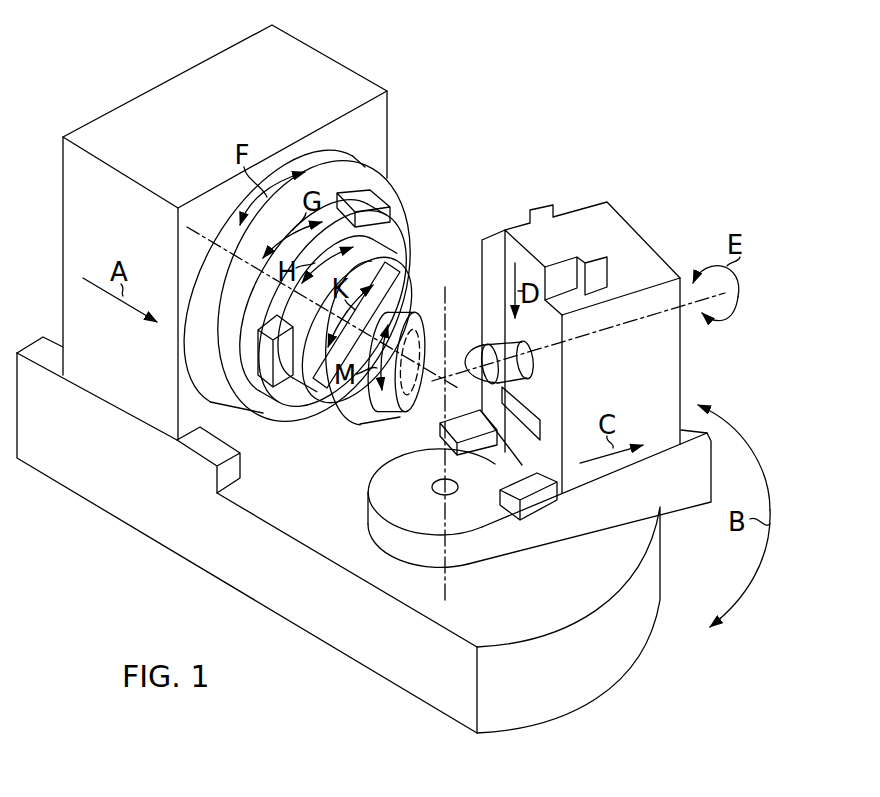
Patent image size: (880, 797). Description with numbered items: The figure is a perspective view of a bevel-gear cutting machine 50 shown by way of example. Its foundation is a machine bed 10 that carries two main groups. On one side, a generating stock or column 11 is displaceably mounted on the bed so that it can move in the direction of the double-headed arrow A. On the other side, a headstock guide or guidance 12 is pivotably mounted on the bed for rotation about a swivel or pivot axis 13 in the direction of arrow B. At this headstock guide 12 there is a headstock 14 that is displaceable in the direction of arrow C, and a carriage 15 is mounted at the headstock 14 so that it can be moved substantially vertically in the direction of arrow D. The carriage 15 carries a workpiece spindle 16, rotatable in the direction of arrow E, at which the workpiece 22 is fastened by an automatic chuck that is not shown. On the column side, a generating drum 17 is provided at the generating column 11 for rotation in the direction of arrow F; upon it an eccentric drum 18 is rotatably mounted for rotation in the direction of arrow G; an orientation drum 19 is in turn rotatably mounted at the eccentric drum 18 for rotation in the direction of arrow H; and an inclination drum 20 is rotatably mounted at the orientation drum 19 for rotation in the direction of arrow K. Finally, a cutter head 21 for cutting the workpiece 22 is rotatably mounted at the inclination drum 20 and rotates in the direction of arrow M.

The machine bed 10 is at (320, 628).
The generating stock or column 11 is at (325, 65).
The headstock guide or guidance 12 is at (687, 500).
The swivel or pivot axis 13 is at (448, 584).
The headstock 14 is at (615, 232).
The carriage 15 is at (547, 217).
The workpiece spindle 16 is at (520, 370).
The generating drum 17 is at (340, 163).
The eccentric drum 18 is at (392, 233).
The orientation drum 19 is at (397, 260).
The inclination drum 20 is at (347, 412).
The cutter head 21 is at (422, 318).
The workpiece 22 is at (483, 358).
The bevel-gear cutting machine 50 is at (460, 130).